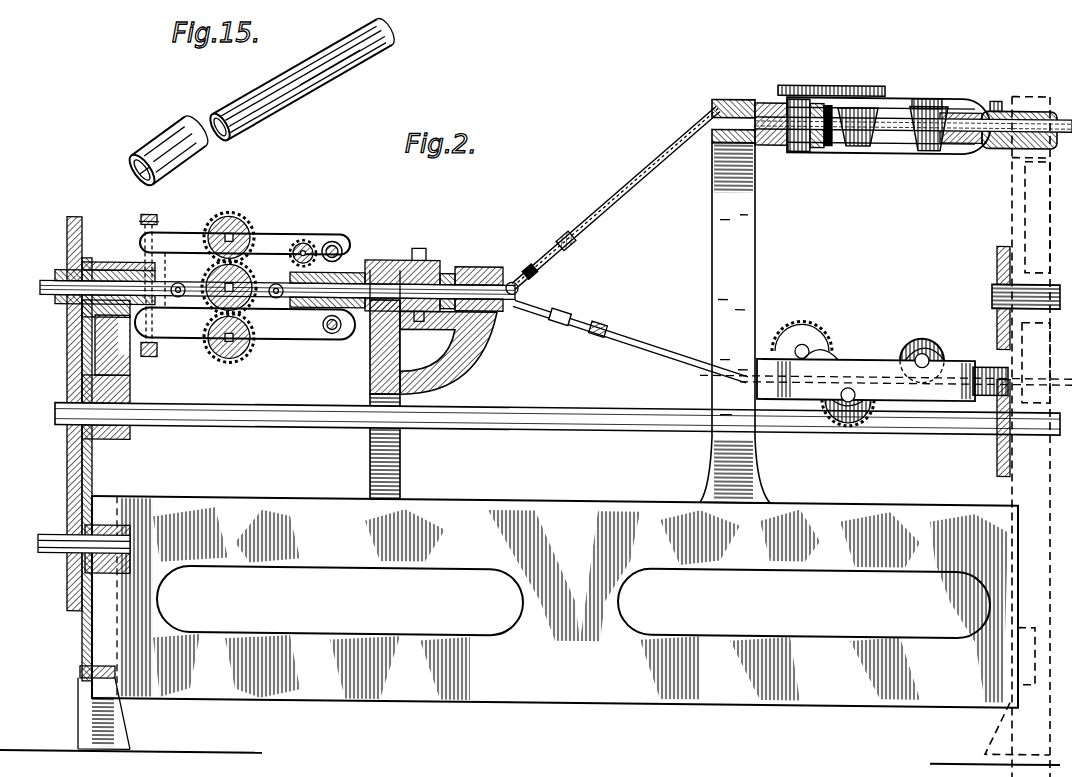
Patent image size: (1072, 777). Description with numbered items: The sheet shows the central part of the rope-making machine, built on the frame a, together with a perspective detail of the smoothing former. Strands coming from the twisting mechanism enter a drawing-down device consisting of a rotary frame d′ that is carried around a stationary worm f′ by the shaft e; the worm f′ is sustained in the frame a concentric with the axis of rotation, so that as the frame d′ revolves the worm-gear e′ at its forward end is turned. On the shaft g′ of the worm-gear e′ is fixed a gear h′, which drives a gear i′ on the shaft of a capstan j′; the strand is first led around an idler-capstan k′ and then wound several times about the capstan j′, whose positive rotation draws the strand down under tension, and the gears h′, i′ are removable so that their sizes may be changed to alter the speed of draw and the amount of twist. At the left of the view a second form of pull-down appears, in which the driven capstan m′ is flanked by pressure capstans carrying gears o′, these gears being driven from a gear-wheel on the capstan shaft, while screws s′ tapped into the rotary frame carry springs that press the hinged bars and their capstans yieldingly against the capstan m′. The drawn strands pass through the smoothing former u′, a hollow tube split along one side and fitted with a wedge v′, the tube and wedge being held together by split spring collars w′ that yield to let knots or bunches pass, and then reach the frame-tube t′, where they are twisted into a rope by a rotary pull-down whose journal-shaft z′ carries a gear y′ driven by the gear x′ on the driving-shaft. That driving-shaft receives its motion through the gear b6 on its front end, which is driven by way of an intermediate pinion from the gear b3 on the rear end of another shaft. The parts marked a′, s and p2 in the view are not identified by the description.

In FIG. 15, the wedge v′ is at (254, 108).
In FIG. 15, the finishing or smoothing former u′ is at (326, 102).
In FIG. 2, the finishing or smoothing former u′ is at (548, 251).
In FIG. 15, the spring collars w′ is at (194, 181).
In FIG. 2, the spring collars w′ is at (590, 313).
In FIG. 2, the journal-shaft z′ is at (58, 281).
In FIG. 2, the gear y′ is at (80, 328).
In FIG. 2, the gear x′ is at (66, 370).
In FIG. 2, the tube a′ is at (452, 252).
In FIG. 2, the frame-tube t′ is at (482, 261).
In FIG. 2, the gears o′ is at (256, 238).
In FIG. 2, the capstan m′ is at (308, 239).
In FIG. 2, the worm-gear e′ is at (340, 244).
In FIG. 2, the screws s′ is at (149, 208).
In FIG. 2, the screw s is at (150, 358).
In FIG. 2, the shaft p2 is at (634, 402).
In FIG. 2, the frame a is at (735, 301).
In FIG. 2, the rotary frame d′ is at (945, 89).
In FIG. 2, the shaft e is at (1024, 101).
In FIG. 2, the gear i′ is at (855, 77).
In FIG. 2, the shaft g′ is at (780, 95).
In FIG. 2, the gear h′ is at (796, 91).
In FIG. 2, the stationary worm f′ is at (826, 141).
In FIG. 2, the capstan j′ is at (874, 113).
In FIG. 2, the idler-capstan k′ is at (924, 143).
In FIG. 2, the gear b3 is at (1000, 251).
In FIG. 2, the gear b6 is at (997, 434).